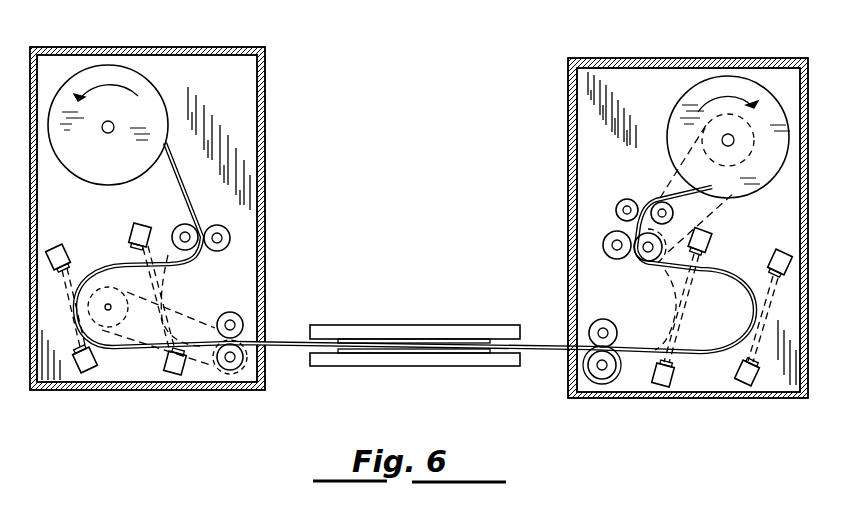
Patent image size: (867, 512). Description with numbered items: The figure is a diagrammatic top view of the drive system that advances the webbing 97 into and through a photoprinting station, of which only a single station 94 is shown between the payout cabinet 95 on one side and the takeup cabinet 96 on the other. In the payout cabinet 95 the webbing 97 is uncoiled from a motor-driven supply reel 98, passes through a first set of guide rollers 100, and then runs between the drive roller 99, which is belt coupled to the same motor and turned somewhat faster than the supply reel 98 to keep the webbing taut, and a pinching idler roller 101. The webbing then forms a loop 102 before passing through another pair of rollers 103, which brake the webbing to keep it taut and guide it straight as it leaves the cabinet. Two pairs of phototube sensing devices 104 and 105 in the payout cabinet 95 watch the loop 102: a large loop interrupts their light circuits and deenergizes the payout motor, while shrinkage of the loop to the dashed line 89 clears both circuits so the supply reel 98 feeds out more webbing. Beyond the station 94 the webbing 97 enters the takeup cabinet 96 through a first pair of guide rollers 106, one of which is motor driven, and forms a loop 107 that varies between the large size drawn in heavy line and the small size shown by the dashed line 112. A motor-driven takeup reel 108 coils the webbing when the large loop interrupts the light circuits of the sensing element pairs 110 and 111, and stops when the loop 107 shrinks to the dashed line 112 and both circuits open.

The dashed line 89 is at (668, 292).
The photoprinting station 94 is at (408, 325).
The payout cabinet 95 is at (598, 57).
The takeup cabinet 96 is at (222, 49).
The webbing 97 is at (552, 351).
The supply reel 98 is at (686, 97).
The drive roller 99 is at (637, 259).
The first set of guide rollers 100 is at (646, 198).
The pinching idler roller 101 is at (602, 245).
The loop 102 is at (704, 288).
The pair of rollers 103 is at (580, 331).
The pair of phototube sensing devices 104 is at (710, 236).
The pair of phototube sensing devices 105 is at (778, 252).
The first pair of guide rollers 106 is at (247, 334).
The loop 107 is at (120, 277).
The takeup reel 108 is at (157, 87).
The pair of phototube sensing elements 110 is at (56, 247).
The pair of phototube sensing elements 111 is at (139, 226).
The dashed line 112 is at (170, 287).